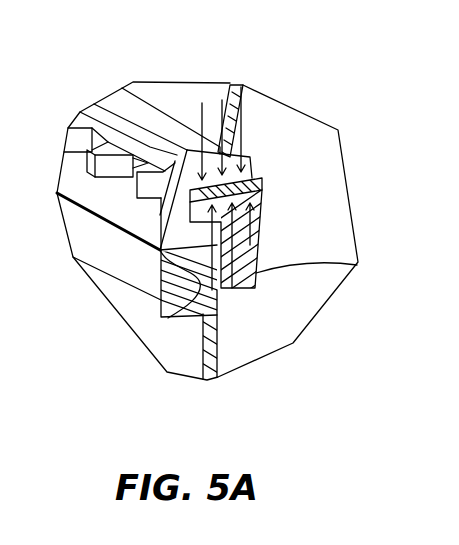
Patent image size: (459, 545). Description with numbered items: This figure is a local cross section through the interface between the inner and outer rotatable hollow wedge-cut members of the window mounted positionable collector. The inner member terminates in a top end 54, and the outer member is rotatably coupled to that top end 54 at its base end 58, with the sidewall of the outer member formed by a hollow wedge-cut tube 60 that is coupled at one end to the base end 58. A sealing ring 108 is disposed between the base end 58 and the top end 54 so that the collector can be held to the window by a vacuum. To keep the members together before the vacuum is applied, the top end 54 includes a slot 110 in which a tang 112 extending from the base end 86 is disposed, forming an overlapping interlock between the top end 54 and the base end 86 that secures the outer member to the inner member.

The top end 54 is at (254, 278).
The base end 58 is at (150, 242).
The hollow wedge-cut tube 60 is at (243, 87).
The base end 86 is at (105, 162).
The sealing ring 108 is at (263, 187).
The slot 110 is at (357, 265).
The tang 112 is at (168, 318).